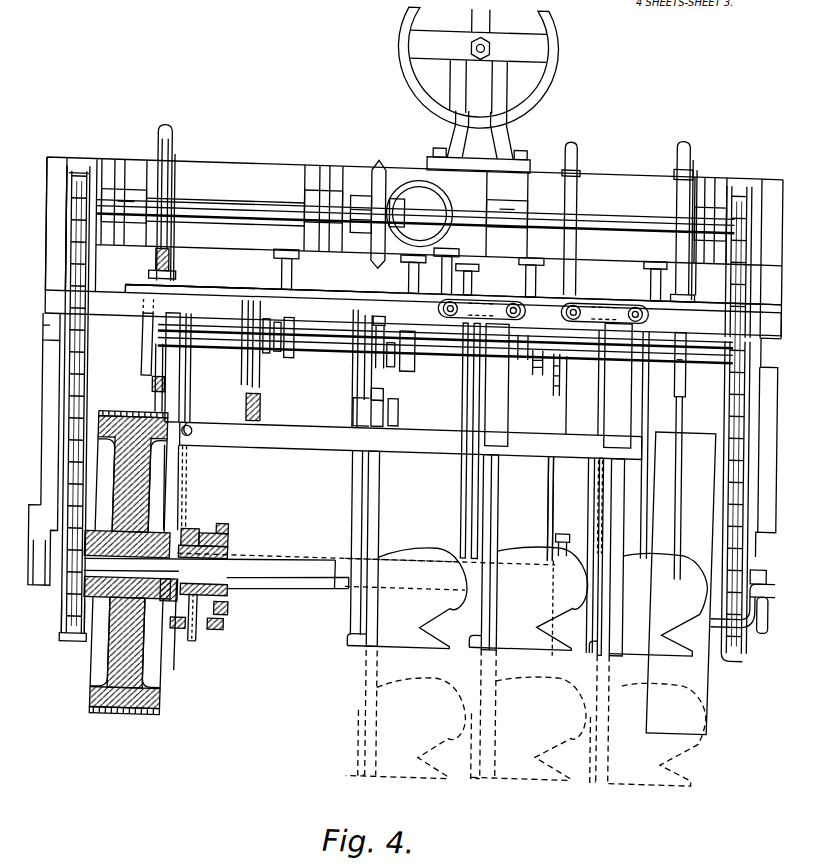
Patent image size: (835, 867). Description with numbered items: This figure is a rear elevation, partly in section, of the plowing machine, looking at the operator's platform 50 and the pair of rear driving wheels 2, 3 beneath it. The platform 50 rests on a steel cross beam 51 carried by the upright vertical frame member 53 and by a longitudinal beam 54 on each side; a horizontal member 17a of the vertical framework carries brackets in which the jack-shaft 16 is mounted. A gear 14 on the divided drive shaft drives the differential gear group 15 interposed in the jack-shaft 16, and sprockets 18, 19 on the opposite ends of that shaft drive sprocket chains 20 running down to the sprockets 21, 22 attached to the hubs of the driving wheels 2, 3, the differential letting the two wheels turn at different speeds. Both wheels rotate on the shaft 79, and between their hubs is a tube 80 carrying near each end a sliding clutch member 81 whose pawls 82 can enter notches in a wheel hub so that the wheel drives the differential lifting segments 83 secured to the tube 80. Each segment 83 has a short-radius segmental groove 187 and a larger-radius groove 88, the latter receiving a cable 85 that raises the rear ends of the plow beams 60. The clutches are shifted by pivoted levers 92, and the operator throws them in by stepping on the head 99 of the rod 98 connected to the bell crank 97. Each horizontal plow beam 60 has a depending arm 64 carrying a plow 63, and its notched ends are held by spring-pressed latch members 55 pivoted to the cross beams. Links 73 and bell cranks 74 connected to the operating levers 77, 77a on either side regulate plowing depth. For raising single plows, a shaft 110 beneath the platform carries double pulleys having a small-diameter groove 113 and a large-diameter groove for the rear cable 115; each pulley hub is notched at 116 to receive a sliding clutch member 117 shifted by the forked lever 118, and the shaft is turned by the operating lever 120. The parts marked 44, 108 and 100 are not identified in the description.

The hand wheel 44 is at (490, 28).
The sprocket 18 is at (80, 172).
The operating lever 77 is at (173, 180).
The horizontal member 17a is at (225, 197).
The jack-shaft 16 is at (253, 210).
The gear 14 is at (438, 185).
The stud 108 is at (447, 238).
The operating lever 120 is at (578, 232).
The head 99 is at (474, 265).
The operator's platform 50 is at (592, 282).
The operating lever 77a is at (691, 150).
The sprocket 19 is at (745, 165).
The operating lever 118 is at (294, 270).
The differential gear group 15 is at (374, 238).
The notch 116 is at (258, 282).
The steel beam 51 is at (413, 313).
The longitudinal beam 54 is at (45, 336).
The sprocket chain 20 is at (90, 353).
The bell crank 74 is at (155, 376).
The sliding clutch member 81 is at (188, 364).
The cable 85 is at (196, 388).
The link 73 is at (156, 389).
The vertical frame member 53 is at (45, 408).
The groove 113 is at (262, 370).
The shaft 110 is at (337, 368).
The plow beam 60 is at (264, 393).
The sliding clutch member 117 is at (424, 308).
The cable 115 is at (386, 366).
The latch member 55 is at (607, 382).
The driving wheel 2 is at (54, 530).
The sprocket 22 is at (745, 620).
The driving wheel 3 is at (724, 674).
The segmental groove 88 is at (192, 466).
The differential lifting segment 83 is at (204, 522).
The pawl 82 is at (216, 528).
The shaft 79 is at (312, 553).
The rod 98 is at (455, 458).
The depending arm 64 is at (383, 500).
The bell crank 97 is at (462, 520).
The plow 63 is at (527, 664).
The tube 80 is at (330, 582).
The pivoted lever 92 is at (240, 604).
The segmental groove 187 is at (207, 637).
The rod 100 is at (190, 666).
The sprocket 21 is at (68, 636).